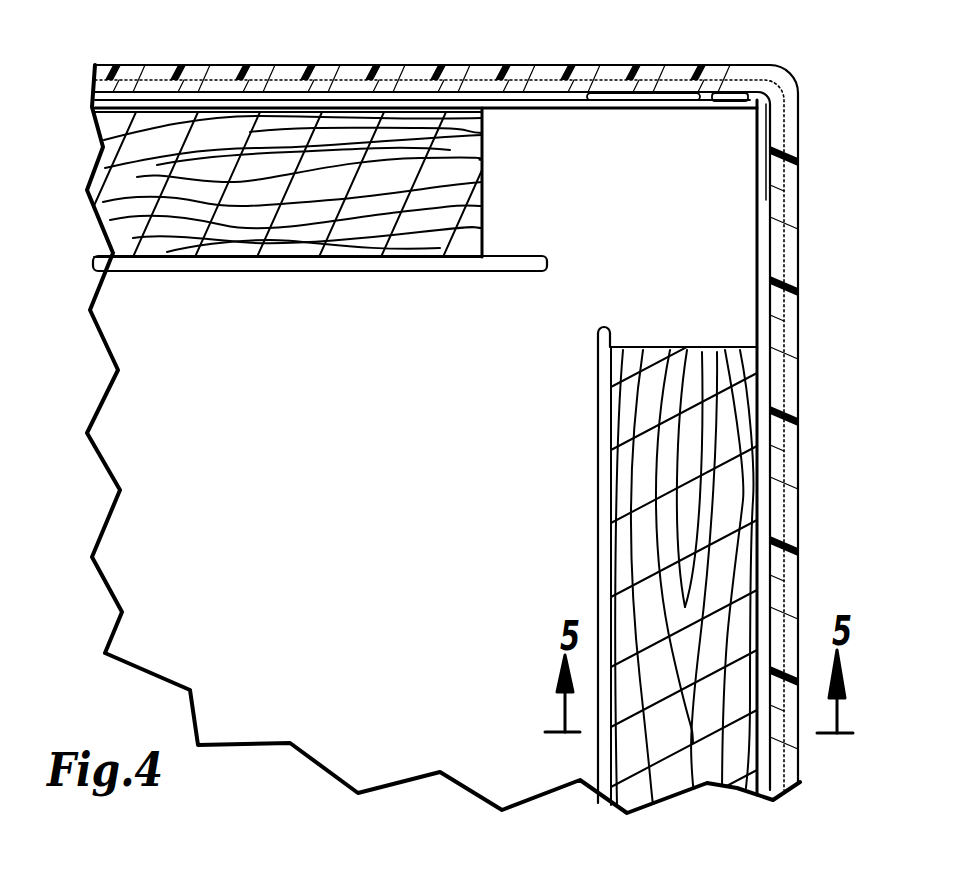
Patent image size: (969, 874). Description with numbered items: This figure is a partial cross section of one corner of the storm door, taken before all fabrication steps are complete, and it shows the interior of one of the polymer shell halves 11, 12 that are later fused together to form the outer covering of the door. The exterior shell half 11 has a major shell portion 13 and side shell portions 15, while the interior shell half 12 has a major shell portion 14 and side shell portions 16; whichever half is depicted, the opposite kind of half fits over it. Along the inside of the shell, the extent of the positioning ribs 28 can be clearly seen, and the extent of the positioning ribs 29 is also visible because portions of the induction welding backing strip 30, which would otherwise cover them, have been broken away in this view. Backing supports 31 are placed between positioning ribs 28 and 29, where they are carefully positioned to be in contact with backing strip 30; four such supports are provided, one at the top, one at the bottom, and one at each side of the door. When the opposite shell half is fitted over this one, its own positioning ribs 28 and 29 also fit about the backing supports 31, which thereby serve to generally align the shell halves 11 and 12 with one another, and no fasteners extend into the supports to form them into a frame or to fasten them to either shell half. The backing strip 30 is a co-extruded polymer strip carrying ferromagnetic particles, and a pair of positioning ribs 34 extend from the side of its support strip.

The exterior polymer material shell half 11 is at (492, 405).
The interior polymer material shell half 12 is at (492, 405).
The major shell portion 13 is at (443, 439).
The major shell portion 14 is at (297, 430).
The side shell portions 15 is at (492, 405).
The side shell portions 16 is at (800, 208).
The positioning ribs 28 is at (422, 273).
The positioning ribs 29 is at (626, 101).
The induction welding backing strip 30 is at (463, 90).
The backing supports 31 is at (414, 477).
The positioning ribs 34 is at (760, 124).